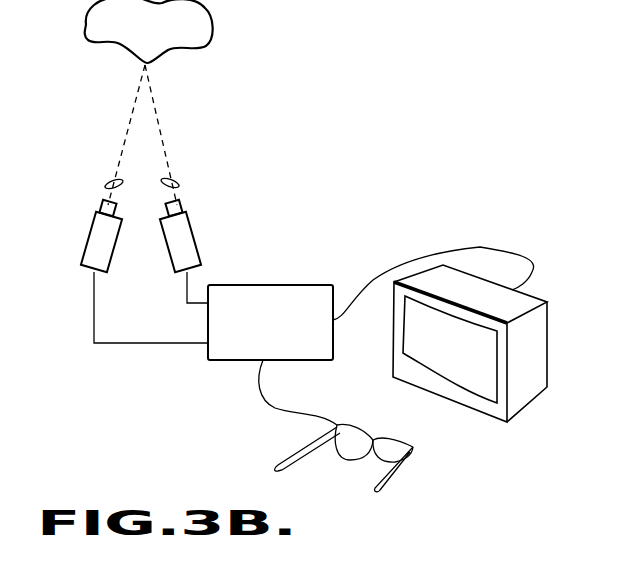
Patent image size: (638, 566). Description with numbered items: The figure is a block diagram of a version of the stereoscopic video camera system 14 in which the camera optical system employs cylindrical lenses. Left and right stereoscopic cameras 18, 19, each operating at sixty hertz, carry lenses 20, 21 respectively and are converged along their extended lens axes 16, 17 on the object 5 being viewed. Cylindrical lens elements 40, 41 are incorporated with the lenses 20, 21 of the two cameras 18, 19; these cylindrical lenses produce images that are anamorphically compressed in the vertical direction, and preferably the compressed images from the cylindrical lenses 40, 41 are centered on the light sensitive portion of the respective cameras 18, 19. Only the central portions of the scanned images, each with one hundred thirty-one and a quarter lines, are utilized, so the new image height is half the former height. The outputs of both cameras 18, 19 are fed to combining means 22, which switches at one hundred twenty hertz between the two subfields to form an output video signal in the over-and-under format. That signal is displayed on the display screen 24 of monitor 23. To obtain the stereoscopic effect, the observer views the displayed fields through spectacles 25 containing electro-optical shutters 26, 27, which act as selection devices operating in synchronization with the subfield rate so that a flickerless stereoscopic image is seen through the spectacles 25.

The object 5 is at (214, 30).
The extended lens axis 16 is at (127, 128).
The extended lens axis 17 is at (155, 115).
The cylindrical lens element 40 is at (103, 181).
The cylindrical lens element 41 is at (181, 182).
The left stereoscopic camera 18 is at (85, 252).
The lens 20 is at (100, 206).
The right stereoscopic camera 19 is at (247, 223).
The lens 21 is at (183, 203).
The camera system 14 is at (158, 293).
The combining means 22 is at (336, 236).
The monitor 23 is at (520, 407).
The display screen 24 is at (415, 355).
The spectacles 25 is at (380, 487).
The electro-optical shutter 26 is at (347, 443).
The electro-optical shutter 27 is at (387, 450).